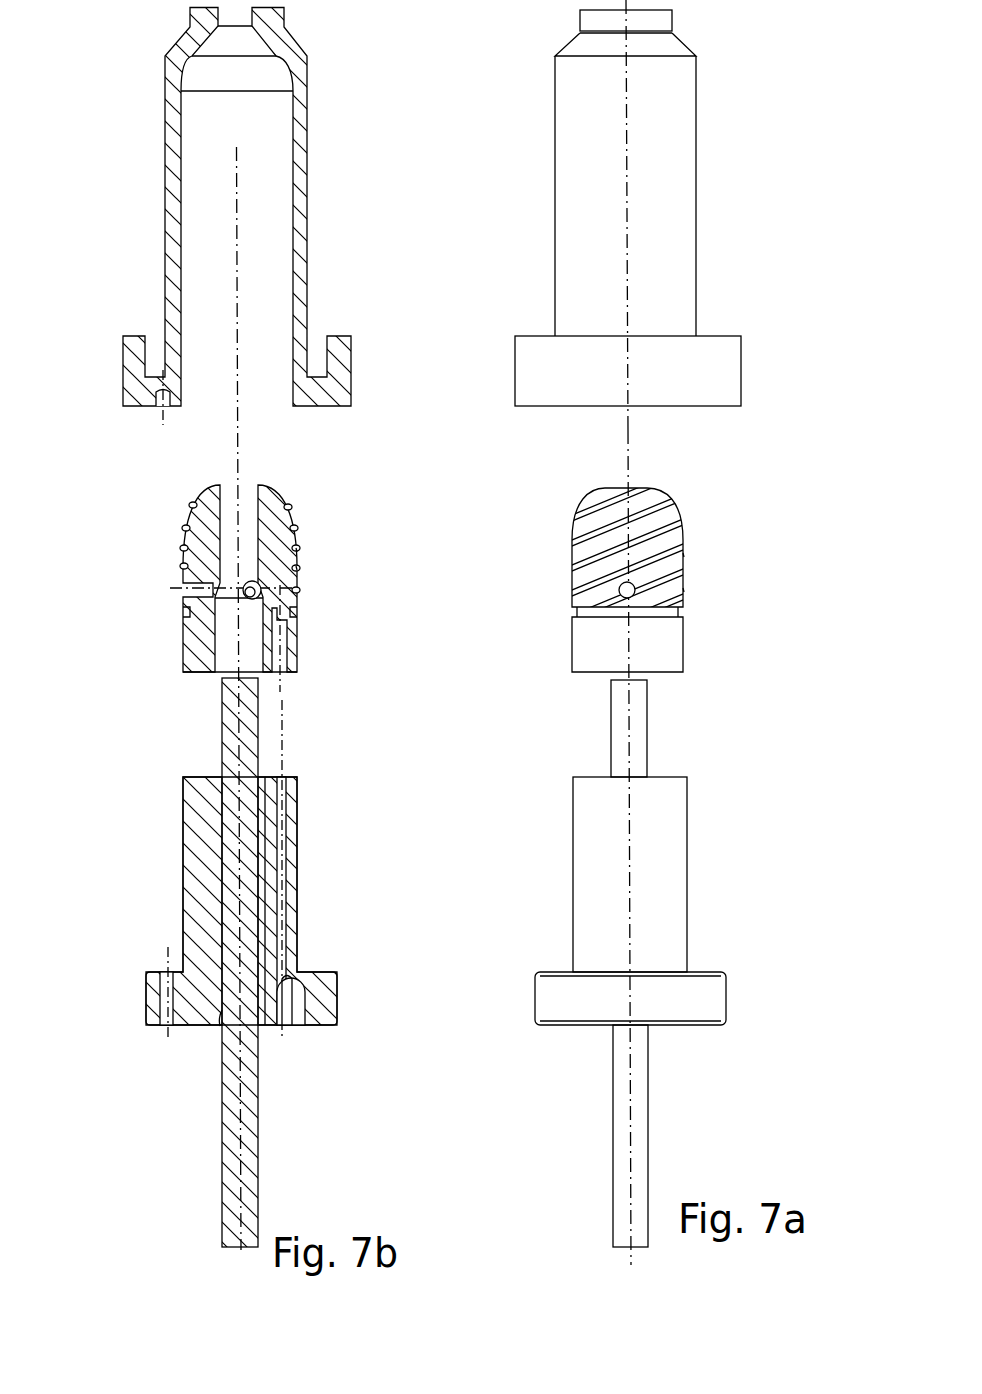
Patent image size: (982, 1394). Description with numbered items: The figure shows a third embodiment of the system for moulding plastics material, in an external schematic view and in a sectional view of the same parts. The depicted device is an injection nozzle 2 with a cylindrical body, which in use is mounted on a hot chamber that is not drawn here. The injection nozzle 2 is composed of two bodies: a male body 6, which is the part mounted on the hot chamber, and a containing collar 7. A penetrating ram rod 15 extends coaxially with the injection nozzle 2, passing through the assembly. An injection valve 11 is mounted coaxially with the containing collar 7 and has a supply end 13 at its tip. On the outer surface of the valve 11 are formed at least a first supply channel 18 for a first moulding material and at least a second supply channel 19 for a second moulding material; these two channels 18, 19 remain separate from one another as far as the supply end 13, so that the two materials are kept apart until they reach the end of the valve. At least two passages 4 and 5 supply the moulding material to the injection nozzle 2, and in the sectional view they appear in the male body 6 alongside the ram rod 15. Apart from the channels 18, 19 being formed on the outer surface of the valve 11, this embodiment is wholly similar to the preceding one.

In FIG. 7b, the injection nozzle 2 is at (99, 257).
In FIG. 7a, the injection nozzle 2 is at (766, 329).
In FIG. 7b, the containing collar 7 is at (307, 185).
In FIG. 7a, the containing collar 7 is at (696, 189).
In FIG. 7b, the supply end 13 is at (262, 486).
In FIG. 7a, the supply end 13 is at (648, 487).
In FIG. 7b, the first supply channel 18 is at (298, 549).
In FIG. 7a, the first supply channel 18 is at (684, 591).
In FIG. 7b, the second supply channel 19 is at (298, 567).
In FIG. 7a, the second supply channel 19 is at (684, 556).
In FIG. 7b, the injection valve 11 is at (302, 645).
In FIG. 7a, the injection valve 11 is at (562, 539).
In FIG. 7b, the penetrating ram rod 15 is at (258, 740).
In FIG. 7a, the penetrating ram rod 15 is at (648, 742).
In FIG. 7b, the male body 6 is at (297, 878).
In FIG. 7a, the male body 6 is at (687, 901).
In FIG. 7b, the passage for supplying moulding material 4 is at (286, 931).
In FIG. 7b, the passage for supplying moulding material 5 is at (220, 1016).